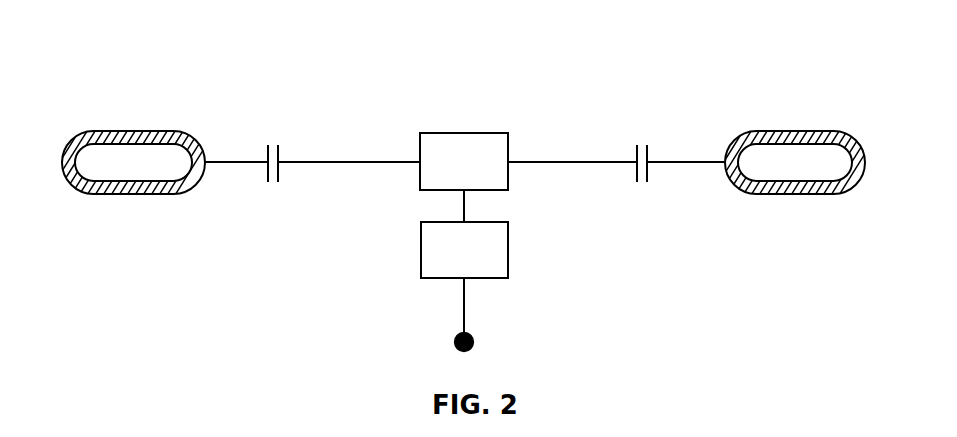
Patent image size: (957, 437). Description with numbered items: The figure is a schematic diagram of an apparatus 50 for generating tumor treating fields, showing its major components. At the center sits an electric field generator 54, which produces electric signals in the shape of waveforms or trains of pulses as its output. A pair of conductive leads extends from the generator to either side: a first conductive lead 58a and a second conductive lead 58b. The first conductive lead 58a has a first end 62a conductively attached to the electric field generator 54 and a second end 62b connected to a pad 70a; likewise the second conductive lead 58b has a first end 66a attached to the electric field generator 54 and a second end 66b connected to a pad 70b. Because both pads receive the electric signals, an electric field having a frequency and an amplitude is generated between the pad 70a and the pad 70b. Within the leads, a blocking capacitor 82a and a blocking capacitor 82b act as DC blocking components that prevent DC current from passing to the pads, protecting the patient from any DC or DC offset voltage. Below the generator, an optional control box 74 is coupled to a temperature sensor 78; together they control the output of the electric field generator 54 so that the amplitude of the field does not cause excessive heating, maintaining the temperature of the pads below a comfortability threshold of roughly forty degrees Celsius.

The apparatus 50 is at (708, 75).
The electric field generator 54 is at (450, 178).
The first conductive lead 58a is at (346, 162).
The second conductive lead 58b is at (586, 162).
The first end 62a is at (420, 165).
The second end 62b is at (206, 161).
The first end 66a is at (508, 165).
The second end 66b is at (723, 160).
The pad 70a is at (133, 195).
The pad 70b is at (795, 195).
The control box 74 is at (450, 267).
The temperature sensor 78 is at (455, 342).
The blocking capacitor 82a is at (272, 183).
The blocking capacitor 82b is at (642, 183).